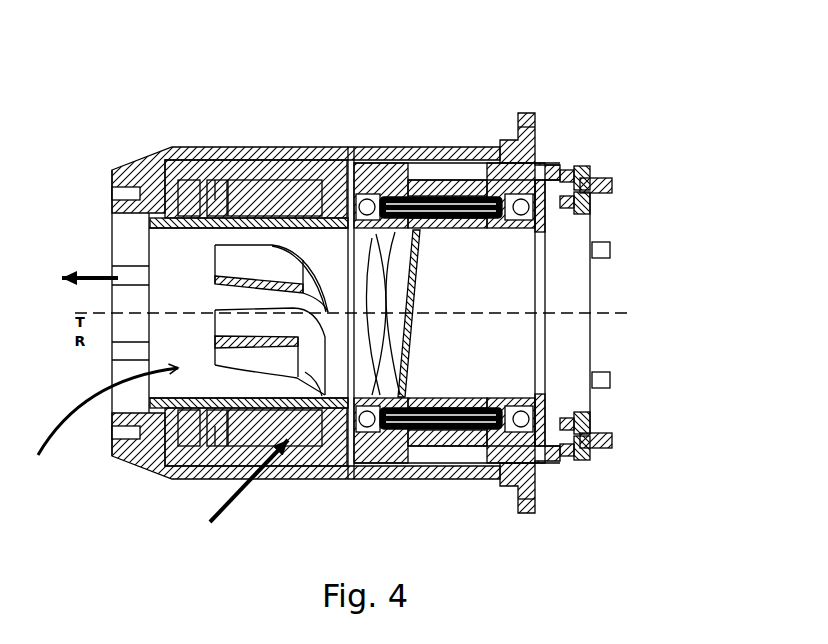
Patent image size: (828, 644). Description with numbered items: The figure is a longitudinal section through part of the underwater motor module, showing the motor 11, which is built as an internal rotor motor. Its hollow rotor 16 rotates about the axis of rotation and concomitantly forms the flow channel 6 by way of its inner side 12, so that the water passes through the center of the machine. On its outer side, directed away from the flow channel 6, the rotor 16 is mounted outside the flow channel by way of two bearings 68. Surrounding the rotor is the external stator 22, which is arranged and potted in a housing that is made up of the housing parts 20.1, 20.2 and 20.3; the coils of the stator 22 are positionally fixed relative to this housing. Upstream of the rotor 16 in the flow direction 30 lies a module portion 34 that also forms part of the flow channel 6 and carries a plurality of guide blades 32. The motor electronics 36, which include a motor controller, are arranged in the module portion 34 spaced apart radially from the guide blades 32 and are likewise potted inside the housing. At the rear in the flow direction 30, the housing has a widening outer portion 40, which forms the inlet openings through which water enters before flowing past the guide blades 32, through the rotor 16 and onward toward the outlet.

The flow channel 6 is at (105, 434).
The motor 11 is at (630, 165).
The inner side 12 is at (466, 353).
The rotor 16 is at (502, 372).
The housing part 20.1 is at (268, 140).
The housing part 20.2 is at (393, 143).
The housing part 20.3 is at (487, 138).
The stator 22 is at (450, 195).
The flow direction 30 is at (85, 275).
The guide blades 32 is at (303, 468).
The module portion 34 is at (195, 128).
The motor electronics 36 is at (239, 499).
The widening outer portion 40 is at (575, 248).
The bearings 68 is at (364, 196).